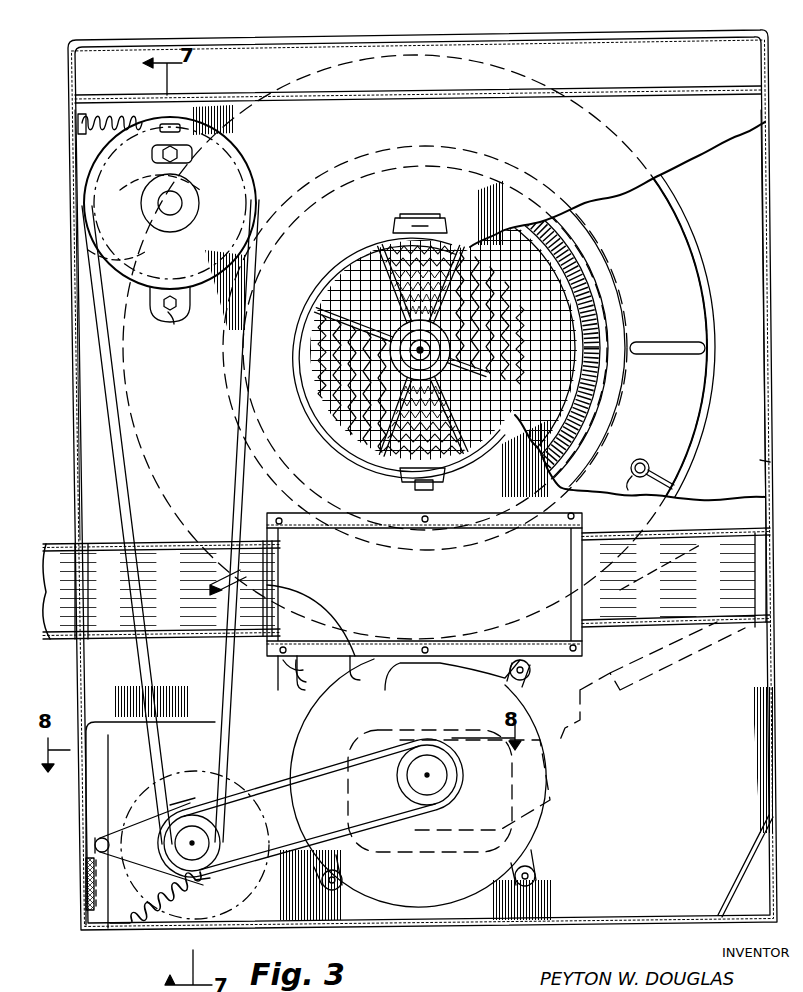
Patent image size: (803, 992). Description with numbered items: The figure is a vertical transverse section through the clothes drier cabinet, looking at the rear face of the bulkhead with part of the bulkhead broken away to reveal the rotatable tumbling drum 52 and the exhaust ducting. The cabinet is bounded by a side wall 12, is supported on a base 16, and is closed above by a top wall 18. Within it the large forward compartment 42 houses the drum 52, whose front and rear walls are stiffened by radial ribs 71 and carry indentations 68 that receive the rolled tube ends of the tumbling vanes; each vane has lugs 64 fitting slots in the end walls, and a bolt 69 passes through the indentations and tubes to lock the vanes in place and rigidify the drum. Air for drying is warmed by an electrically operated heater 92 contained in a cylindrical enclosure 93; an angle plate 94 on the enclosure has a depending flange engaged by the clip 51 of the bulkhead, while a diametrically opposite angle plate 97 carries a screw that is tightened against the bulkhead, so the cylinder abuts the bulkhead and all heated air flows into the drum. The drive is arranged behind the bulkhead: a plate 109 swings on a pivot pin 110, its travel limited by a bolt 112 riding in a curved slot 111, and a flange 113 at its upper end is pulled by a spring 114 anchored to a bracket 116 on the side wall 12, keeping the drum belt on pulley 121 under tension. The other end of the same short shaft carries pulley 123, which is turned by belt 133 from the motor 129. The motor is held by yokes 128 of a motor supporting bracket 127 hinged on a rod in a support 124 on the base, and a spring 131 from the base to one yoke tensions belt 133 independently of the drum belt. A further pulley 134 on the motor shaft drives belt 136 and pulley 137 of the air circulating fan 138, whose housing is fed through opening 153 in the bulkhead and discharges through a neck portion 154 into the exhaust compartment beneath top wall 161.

The side wall 12 is at (72, 348).
The base 16 is at (86, 921).
The top wall 18 is at (234, 40).
The forward compartment 42 is at (760, 464).
The clip 51 is at (440, 485).
The tumbling drum 52 is at (700, 440).
The lugs 64 is at (675, 487).
The indentations 68 is at (637, 459).
The bolt 69 is at (634, 482).
The radial ribs 71 is at (646, 343).
The heater 92 is at (366, 440).
The cylindrical enclosure 93 is at (330, 432).
The angle plate 94 is at (406, 484).
The angle plate 97 is at (410, 218).
The plate 109 is at (164, 306).
The pivot pin 110 is at (172, 325).
The curved slot 111 is at (185, 158).
The bolt 112 is at (195, 152).
The flange 113 is at (172, 126).
The spring 114 is at (98, 120).
The bracket 116 is at (78, 130).
The pulley 121 is at (143, 196).
The pulley 123 is at (86, 254).
The support 124 is at (100, 874).
The motor supporting bracket 127 is at (132, 800).
The yokes 128 is at (208, 880).
The motor 129 is at (148, 816).
The spring 131 is at (166, 908).
The belt 133 is at (222, 586).
The pulley 134 is at (755, 580).
The belt 136 is at (360, 740).
The pulley 137 is at (445, 768).
The air circulating fan 138 is at (486, 846).
The opening 153 is at (400, 742).
The neck portion 154 is at (284, 688).
The top wall 161 is at (370, 528).